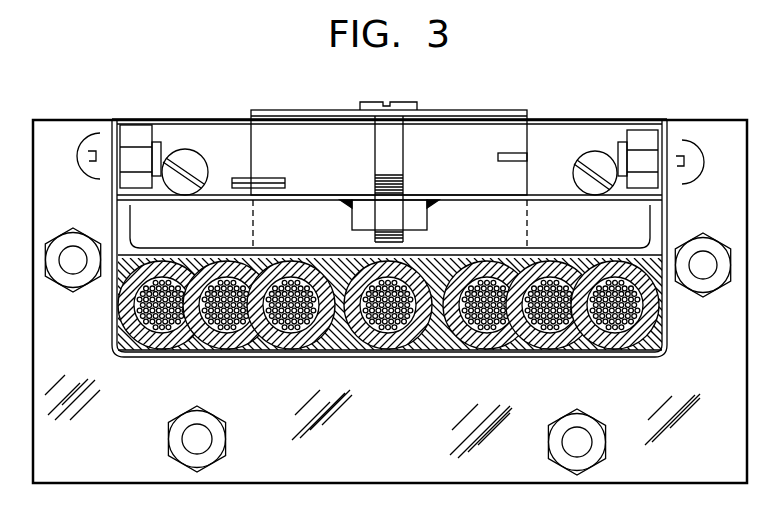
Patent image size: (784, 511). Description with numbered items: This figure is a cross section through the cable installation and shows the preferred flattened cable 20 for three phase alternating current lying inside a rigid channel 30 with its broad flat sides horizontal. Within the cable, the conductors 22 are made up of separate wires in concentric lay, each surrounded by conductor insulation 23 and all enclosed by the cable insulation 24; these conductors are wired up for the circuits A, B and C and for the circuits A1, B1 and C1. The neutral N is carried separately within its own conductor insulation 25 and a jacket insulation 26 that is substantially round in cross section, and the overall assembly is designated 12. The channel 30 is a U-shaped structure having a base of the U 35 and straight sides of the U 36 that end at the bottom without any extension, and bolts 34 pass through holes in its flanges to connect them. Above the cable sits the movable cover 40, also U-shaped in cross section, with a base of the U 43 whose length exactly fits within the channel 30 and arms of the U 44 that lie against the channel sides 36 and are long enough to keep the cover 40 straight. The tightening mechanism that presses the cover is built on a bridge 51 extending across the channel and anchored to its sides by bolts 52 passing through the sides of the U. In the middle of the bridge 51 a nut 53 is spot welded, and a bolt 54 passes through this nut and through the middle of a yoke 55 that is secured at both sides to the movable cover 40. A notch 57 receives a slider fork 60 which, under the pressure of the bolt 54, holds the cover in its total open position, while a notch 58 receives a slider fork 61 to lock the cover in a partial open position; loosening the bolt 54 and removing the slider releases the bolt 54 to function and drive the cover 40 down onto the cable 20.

The cable splice assembly 12 is at (490, 348).
The flattened cable 20 is at (227, 353).
The conductors 22 is at (385, 350).
The conductor insulation 23 is at (475, 255).
The cable insulation 24 is at (602, 348).
The conductor insulation 25 is at (353, 262).
The jacket insulation 26 is at (382, 357).
The channel 30 is at (427, 357).
The bolts 34 is at (568, 440).
The base of the U 35 is at (140, 338).
The sides of the U 36 is at (667, 318).
The movable cover 40 is at (520, 252).
The base of the U 43 is at (505, 250).
The arms of the U 44 is at (112, 213).
The bridge 51 is at (440, 195).
The bolts 52 is at (97, 165).
The nut 53 is at (425, 222).
The bolt 54 is at (376, 148).
The yoke 55 is at (462, 110).
The notch 57 is at (276, 178).
The notch 58 is at (527, 130).
The slider fork 60 is at (232, 180).
The slider fork 61 is at (534, 158).
The circuit A is at (620, 345).
The circuit B is at (540, 340).
The circuit C is at (476, 335).
The neutral N is at (347, 247).
The circuit A1 is at (275, 320).
The circuit B1 is at (195, 325).
The circuit C1 is at (158, 318).